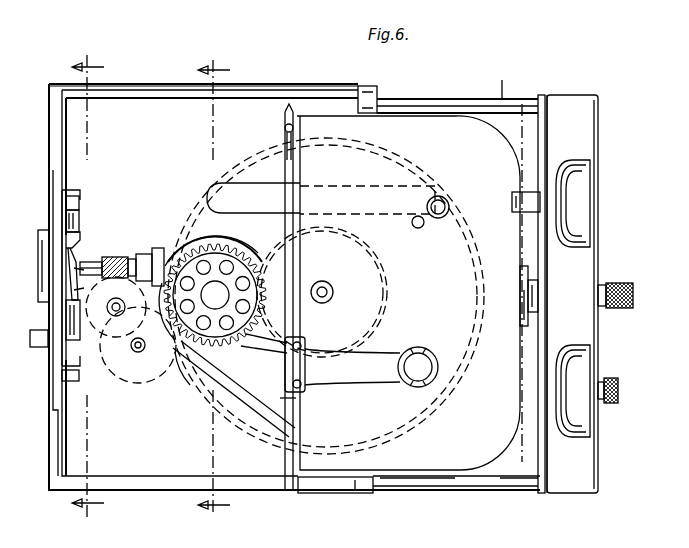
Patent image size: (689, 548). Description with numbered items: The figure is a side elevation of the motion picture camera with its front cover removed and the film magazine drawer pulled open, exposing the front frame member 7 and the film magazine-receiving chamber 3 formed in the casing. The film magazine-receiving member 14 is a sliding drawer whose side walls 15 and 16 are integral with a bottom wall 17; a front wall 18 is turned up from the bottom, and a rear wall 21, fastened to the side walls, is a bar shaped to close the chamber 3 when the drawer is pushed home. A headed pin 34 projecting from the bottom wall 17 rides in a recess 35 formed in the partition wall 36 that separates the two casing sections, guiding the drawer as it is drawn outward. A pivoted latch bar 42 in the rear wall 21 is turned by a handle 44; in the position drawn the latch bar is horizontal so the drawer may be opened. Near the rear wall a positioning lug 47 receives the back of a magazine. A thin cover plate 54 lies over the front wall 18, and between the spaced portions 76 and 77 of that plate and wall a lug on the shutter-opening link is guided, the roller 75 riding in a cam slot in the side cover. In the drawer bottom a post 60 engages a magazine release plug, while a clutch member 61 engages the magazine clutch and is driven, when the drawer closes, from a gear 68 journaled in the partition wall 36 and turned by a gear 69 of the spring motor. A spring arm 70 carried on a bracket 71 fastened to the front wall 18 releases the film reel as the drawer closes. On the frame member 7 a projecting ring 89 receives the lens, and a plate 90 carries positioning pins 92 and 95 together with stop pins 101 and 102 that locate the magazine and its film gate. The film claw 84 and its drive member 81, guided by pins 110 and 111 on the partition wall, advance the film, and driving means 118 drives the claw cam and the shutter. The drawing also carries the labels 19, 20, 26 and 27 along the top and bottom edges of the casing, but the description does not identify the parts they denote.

The film magazine-receiving chamber 3 is at (96, 462).
The front frame member 7 is at (55, 172).
The film magazine-receiving member 14 is at (603, 488).
The side wall 15 is at (297, 285).
The side wall 16 is at (465, 503).
The bottom wall 17 is at (515, 466).
The front wall 18 is at (287, 424).
The latch 19 is at (309, 116).
The latch 20 is at (310, 494).
The rear wall 21 is at (590, 452).
The top rail 26 is at (449, 100).
The bottom rail 27 is at (414, 488).
The headed pin 34 is at (441, 204).
The recess 35 is at (225, 195).
The partition wall 36 is at (148, 104).
The latch bar 42 is at (526, 326).
The handle 44 is at (612, 308).
The positioning lug 47 is at (524, 286).
The cover plate 54 is at (285, 405).
The post 60 is at (417, 229).
The clutch member 61 is at (426, 350).
The gear 68 is at (233, 333).
The gear 69 is at (269, 258).
The spring arm 70 is at (372, 380).
The bracket 71 is at (285, 376).
The roller 75 is at (285, 126).
The spaced portion 76 is at (284, 150).
The spaced portion 77 is at (296, 158).
The drive member 81 is at (68, 264).
The film claw 84 is at (89, 270).
The projecting ring 89 is at (44, 296).
The plate 90 is at (64, 200).
The pin 92 is at (78, 234).
The pin 95 is at (109, 335).
The stop pin 101 is at (78, 198).
The stop pin 102 is at (84, 384).
The guide pin 110 is at (78, 215).
The guide pin 111 is at (70, 322).
The driving means 118 is at (133, 247).